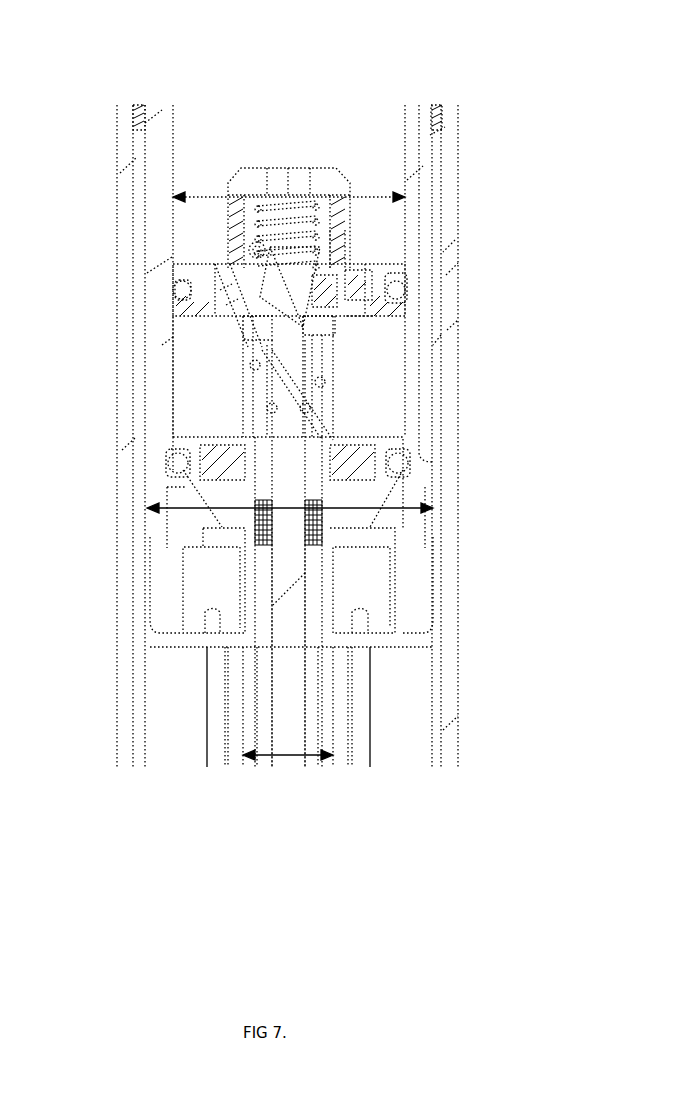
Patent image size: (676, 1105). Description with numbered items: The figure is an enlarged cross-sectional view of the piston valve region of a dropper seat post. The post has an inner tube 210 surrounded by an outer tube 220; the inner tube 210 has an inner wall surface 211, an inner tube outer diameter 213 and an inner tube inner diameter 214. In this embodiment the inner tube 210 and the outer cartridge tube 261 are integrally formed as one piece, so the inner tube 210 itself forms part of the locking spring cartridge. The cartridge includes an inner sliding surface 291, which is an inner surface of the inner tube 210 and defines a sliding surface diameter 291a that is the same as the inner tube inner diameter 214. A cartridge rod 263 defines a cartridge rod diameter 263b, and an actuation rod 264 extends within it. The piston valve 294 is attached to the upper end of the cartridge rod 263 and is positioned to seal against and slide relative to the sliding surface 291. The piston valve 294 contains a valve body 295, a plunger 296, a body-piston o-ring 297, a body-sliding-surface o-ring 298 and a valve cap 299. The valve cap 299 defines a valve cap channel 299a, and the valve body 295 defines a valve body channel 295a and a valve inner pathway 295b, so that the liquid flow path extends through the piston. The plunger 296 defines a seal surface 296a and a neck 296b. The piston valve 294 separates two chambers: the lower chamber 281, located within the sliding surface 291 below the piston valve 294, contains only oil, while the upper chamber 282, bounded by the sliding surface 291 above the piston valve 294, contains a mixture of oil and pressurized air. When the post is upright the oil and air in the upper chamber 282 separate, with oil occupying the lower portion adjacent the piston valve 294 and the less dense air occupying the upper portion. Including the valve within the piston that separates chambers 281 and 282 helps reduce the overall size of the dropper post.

The valve cap 299 is at (257, 168).
The valve cap channel 299a is at (342, 242).
The sliding surface diameter 291a is at (205, 160).
The inner tube inner diameter 214 is at (210, 193).
The upper chamber 282 is at (203, 235).
The seal surface 296a is at (262, 287).
The neck 296b is at (310, 365).
The lower chamber 281 is at (207, 417).
The inner tube 210 is at (219, 591).
The outer cartridge tube 261 is at (152, 463).
The inner tube outer diameter 213 is at (200, 502).
The cartridge rod diameter 263b is at (285, 753).
The inner wall surface 211 is at (469, 436).
The inner sliding surface 291 is at (402, 236).
The piston valve 294 is at (370, 252).
The valve body 295 is at (370, 274).
The body-sliding-surface o-ring 298 is at (398, 290).
The body-piston o-ring 297 is at (340, 308).
The valve body channel 295a is at (348, 328).
The valve inner pathway 295b is at (312, 366).
The plunger 296 is at (292, 425).
The outer tube 220 is at (458, 576).
The actuation rod 264 is at (307, 657).
The cartridge rod 263 is at (332, 715).